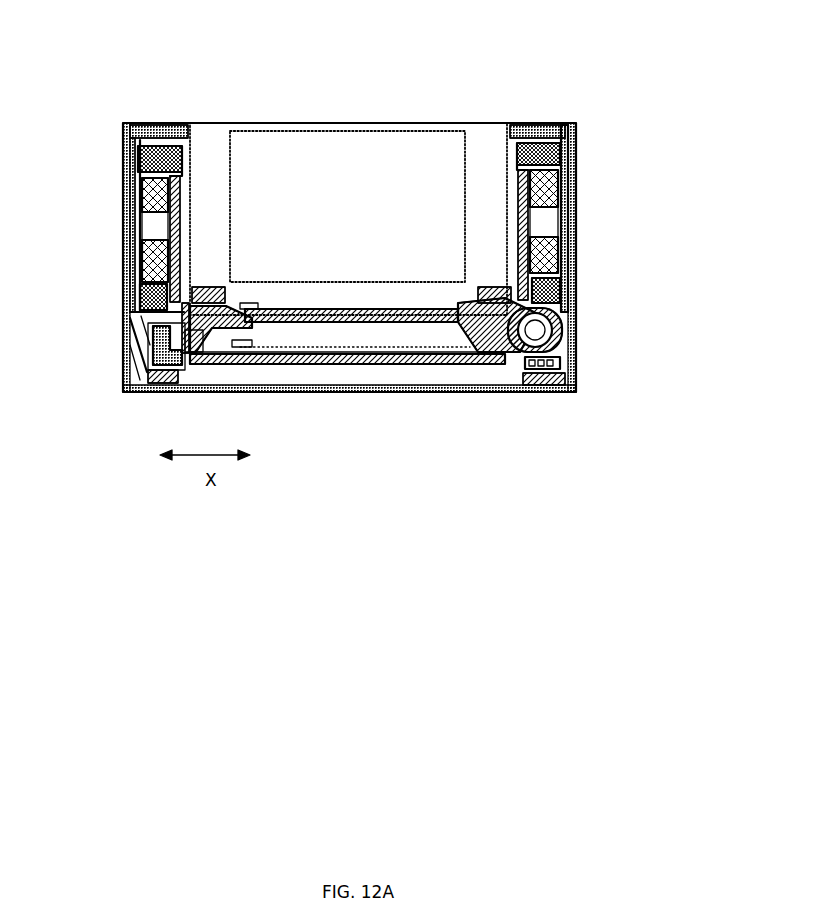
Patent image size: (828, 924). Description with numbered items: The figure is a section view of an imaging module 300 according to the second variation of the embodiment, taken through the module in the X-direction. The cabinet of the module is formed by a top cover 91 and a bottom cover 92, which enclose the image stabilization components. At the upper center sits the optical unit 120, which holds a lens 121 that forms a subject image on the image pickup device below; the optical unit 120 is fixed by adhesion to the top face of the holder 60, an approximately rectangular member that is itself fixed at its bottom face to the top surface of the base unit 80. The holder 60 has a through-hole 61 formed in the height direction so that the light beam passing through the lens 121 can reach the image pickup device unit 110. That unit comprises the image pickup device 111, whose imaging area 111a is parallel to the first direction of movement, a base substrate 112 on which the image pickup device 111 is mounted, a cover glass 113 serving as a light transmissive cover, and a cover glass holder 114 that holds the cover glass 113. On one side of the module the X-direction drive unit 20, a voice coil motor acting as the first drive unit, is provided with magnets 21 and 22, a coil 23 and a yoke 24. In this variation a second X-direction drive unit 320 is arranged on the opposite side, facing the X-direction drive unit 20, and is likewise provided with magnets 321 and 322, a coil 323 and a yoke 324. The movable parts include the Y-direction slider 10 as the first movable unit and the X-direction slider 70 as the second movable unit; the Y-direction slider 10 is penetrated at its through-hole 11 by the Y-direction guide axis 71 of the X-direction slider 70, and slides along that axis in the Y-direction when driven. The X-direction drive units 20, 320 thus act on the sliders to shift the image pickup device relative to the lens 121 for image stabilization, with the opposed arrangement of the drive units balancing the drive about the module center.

The imaging module 300 is at (105, 86).
The bottom cover 92 is at (123, 127).
The top cover 91 is at (169, 124).
The optical unit 120 is at (476, 122).
The lens 121 is at (412, 135).
The X-direction drive unit 20 is at (66, 142).
The magnet 21 is at (138, 153).
The yoke 24 is at (142, 200).
The coil 23 is at (138, 254).
The magnet 22 is at (138, 288).
The X-direction slider 70 is at (148, 330).
The base unit 80 is at (130, 358).
The cover glass 113 is at (413, 321).
The cover glass holder 114 is at (203, 353).
The base substrate 112 is at (242, 347).
The image pickup device 111 is at (355, 364).
The imaging area 111a is at (399, 345).
The image pickup device unit 110 is at (293, 364).
The through-hole 61 is at (465, 312).
The holder 60 is at (562, 276).
The through-hole 11 is at (552, 323).
The Y-direction guide axis 71 is at (552, 340).
The X-direction drive unit 320 is at (672, 146).
The Y-direction slider 10 is at (565, 247).
The magnet 321 is at (562, 148).
The yoke 324 is at (562, 206).
The coil 323 is at (562, 180).
The magnet 322 is at (562, 270).